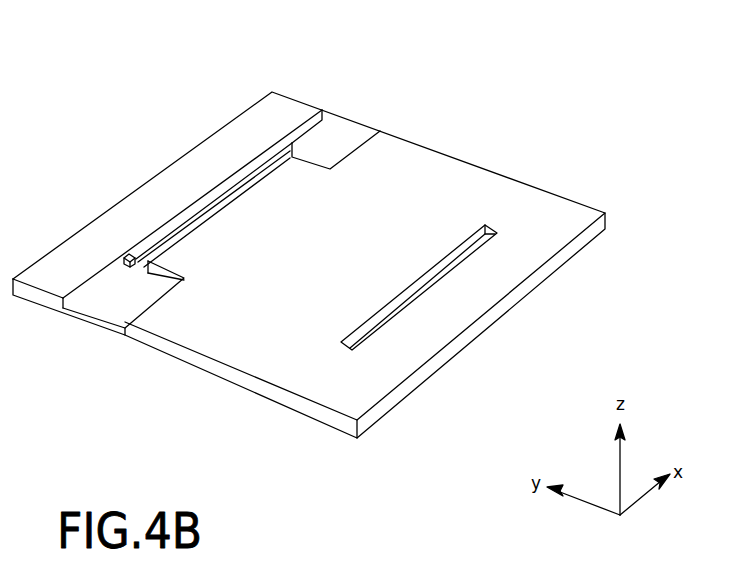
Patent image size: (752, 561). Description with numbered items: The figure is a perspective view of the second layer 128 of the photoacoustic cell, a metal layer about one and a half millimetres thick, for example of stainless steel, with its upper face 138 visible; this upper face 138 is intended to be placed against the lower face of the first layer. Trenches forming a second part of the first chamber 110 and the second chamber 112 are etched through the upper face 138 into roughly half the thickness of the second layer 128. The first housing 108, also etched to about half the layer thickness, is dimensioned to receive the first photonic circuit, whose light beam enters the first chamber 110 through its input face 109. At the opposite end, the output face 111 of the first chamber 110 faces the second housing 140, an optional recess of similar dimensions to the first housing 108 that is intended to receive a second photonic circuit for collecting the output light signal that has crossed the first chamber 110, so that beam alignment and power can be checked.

The second layer 128 is at (502, 170).
The first housing 108 is at (117, 303).
The second housing 140 is at (330, 138).
The first chamber 110 is at (222, 207).
The output face 111 is at (287, 137).
The input face 109 is at (143, 260).
The second chamber 112 is at (438, 277).
The upper face 138 is at (267, 330).